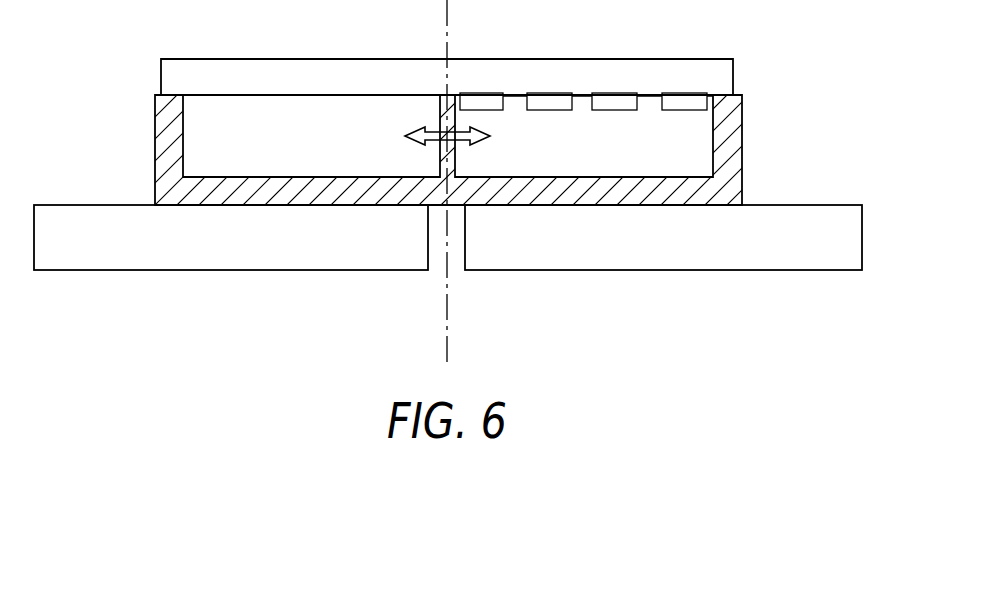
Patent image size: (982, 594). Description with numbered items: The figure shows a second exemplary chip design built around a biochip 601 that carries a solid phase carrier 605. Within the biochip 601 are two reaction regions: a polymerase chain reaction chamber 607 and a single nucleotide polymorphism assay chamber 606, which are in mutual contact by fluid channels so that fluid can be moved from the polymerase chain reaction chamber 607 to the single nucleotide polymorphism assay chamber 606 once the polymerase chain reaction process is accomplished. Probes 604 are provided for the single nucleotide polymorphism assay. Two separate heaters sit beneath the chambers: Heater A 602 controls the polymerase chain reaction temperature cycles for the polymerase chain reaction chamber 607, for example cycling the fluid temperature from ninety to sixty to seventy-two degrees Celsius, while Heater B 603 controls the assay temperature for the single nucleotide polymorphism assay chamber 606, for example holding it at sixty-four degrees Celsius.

The biochip 601 is at (155, 148).
The Heater A 602 is at (230, 272).
The Heater B 603 is at (664, 272).
The probes 604 is at (718, 96).
The solid phase carrier 605 is at (483, 49).
The single nucleotide polymorphism (SNP) assay chamber 606 is at (587, 58).
The polymerase chain reaction (PCR) chamber 607 is at (303, 58).